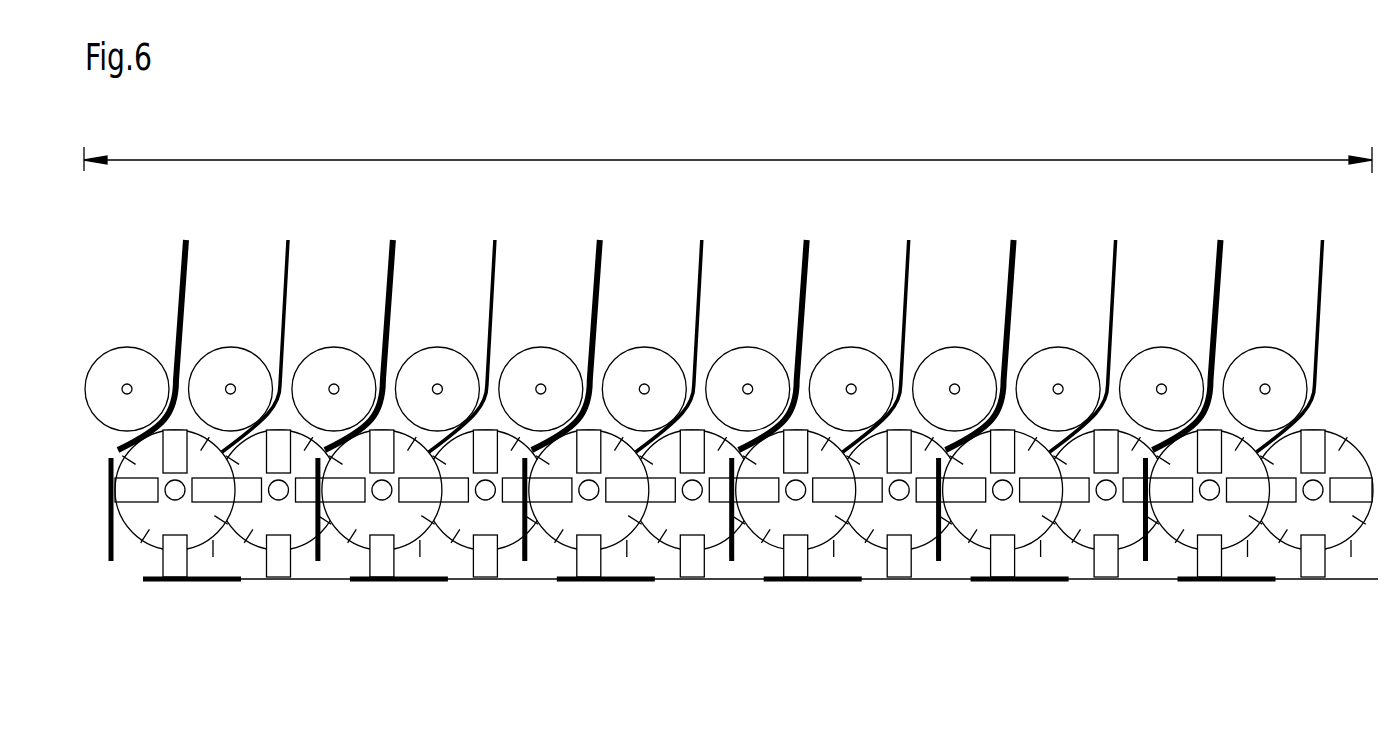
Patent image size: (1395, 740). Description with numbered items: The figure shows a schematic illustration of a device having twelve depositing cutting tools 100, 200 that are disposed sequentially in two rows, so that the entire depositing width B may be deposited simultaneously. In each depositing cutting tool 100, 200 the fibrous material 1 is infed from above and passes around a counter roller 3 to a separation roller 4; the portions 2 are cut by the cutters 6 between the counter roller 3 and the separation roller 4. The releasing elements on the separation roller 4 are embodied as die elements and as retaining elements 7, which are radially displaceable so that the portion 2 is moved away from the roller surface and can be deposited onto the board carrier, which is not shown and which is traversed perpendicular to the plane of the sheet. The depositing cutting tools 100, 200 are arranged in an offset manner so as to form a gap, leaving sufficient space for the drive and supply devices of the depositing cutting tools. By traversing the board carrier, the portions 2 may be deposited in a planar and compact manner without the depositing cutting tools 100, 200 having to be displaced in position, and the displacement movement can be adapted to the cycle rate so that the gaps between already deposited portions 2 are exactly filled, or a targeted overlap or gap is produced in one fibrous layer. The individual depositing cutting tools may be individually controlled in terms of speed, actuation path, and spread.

The fibrous material 1 is at (180, 268).
The portions 2 is at (110, 535).
The counter roller 3 is at (113, 348).
The separation roller 4 is at (198, 552).
The cutters 6 is at (142, 541).
The retaining elements 7 is at (160, 556).
The depositing cutting tool 100 is at (669, 324).
The depositing cutting tool 200 is at (303, 268).
The depositing width B is at (728, 152).